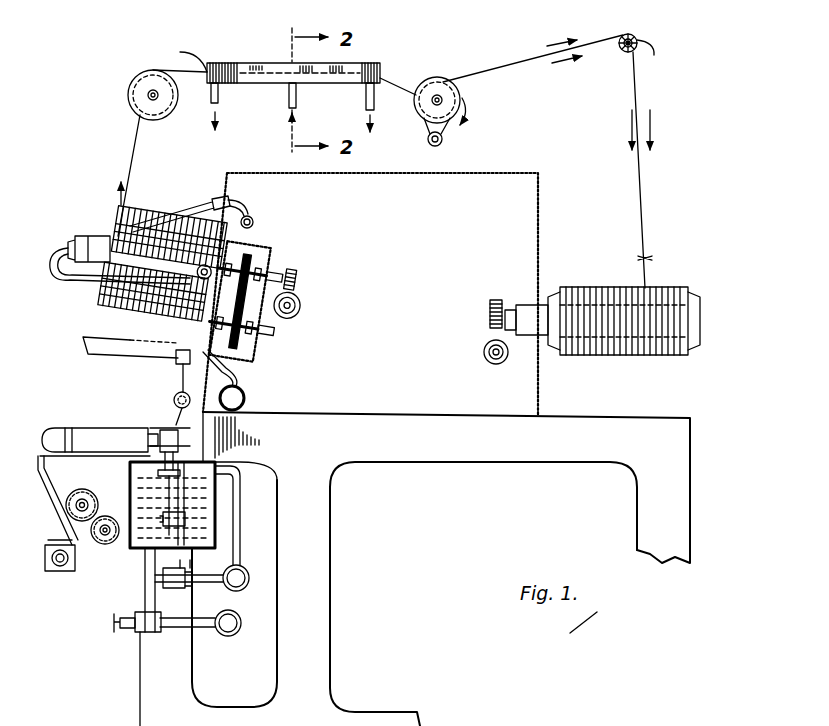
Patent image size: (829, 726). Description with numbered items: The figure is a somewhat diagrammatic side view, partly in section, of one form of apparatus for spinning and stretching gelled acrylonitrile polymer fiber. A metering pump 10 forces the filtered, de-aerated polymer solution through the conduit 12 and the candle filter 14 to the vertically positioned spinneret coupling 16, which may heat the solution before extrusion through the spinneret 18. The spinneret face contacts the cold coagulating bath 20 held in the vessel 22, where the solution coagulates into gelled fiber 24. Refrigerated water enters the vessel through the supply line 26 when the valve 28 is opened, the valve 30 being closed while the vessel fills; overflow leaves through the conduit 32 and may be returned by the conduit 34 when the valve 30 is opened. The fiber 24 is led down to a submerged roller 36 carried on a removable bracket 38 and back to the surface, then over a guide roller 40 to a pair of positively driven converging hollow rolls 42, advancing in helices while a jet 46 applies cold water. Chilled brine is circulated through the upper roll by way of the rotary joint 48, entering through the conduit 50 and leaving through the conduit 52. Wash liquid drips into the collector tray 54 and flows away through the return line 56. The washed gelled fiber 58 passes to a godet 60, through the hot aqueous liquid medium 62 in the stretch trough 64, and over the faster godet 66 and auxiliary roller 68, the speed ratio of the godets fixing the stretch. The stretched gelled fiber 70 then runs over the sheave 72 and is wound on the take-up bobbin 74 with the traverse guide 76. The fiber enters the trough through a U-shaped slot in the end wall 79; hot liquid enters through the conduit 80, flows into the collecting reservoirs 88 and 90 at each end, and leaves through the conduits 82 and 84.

The metering pump 10 is at (52, 565).
The conduit 12 is at (62, 478).
The candle filter 14 is at (142, 422).
The spinneret coupling 16 is at (190, 440).
The spinneret 18 is at (233, 472).
The coagulating bath 20 is at (133, 548).
The vessel 22 is at (190, 487).
The gelled fiber 24 is at (135, 500).
The supply line 26 is at (226, 636).
The valve 28 is at (118, 628).
The valve 30 is at (215, 585).
The conduit 32 is at (243, 550).
The conduit 34 is at (197, 556).
The submerged roller 36 is at (186, 515).
The removable bracket 38 is at (188, 530).
The guide roller 40 is at (173, 398).
The converging hollow rolls 42 is at (208, 248).
The jet 46 is at (132, 226).
The rotary joint 48 is at (93, 232).
The conduit 50 is at (68, 283).
The conduit 52 is at (92, 305).
The collector tray 54 is at (98, 358).
The return line 56 is at (250, 376).
The washed gelled fiber 58 is at (134, 157).
The godet 60 is at (132, 90).
The hot aqueous liquid medium 62 is at (262, 97).
The stretch trough 64 is at (222, 60).
The godet 66 is at (462, 92).
The auxiliary roller 68 is at (444, 140).
The stretched gelled fiber 70 is at (523, 63).
The guide roll or sheave 72 is at (651, 52).
The take-up bobbin 74 is at (700, 303).
The traverse guide 76 is at (652, 258).
The end wall 79 is at (173, 55).
The conduit 80 is at (296, 110).
The conduit 82 is at (233, 125).
The conduit 84 is at (384, 112).
The collecting reservoir 88 is at (200, 92).
The collecting reservoir 90 is at (334, 97).